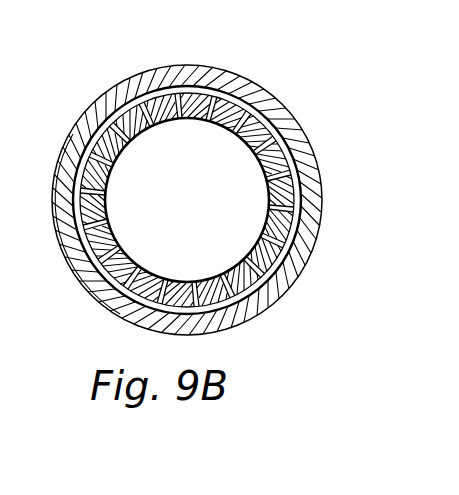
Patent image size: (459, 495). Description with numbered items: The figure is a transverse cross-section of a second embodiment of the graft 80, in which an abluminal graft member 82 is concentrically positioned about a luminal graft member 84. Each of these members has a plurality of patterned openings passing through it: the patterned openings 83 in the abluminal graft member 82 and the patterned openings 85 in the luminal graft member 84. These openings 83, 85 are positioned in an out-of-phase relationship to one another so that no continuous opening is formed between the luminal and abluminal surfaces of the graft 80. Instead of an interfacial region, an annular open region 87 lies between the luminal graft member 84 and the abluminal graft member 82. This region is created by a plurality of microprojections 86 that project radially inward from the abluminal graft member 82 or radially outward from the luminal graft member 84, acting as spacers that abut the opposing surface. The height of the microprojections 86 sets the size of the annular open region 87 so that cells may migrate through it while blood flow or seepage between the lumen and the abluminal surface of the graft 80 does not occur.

The graft 80 is at (258, 60).
The abluminal graft member 82 is at (340, 113).
The patterned openings 83 is at (318, 226).
The luminal graft member 84 is at (117, 106).
The patterned openings 85 is at (63, 255).
The microprojections 86 is at (207, 88).
The annular open region 87 is at (237, 327).